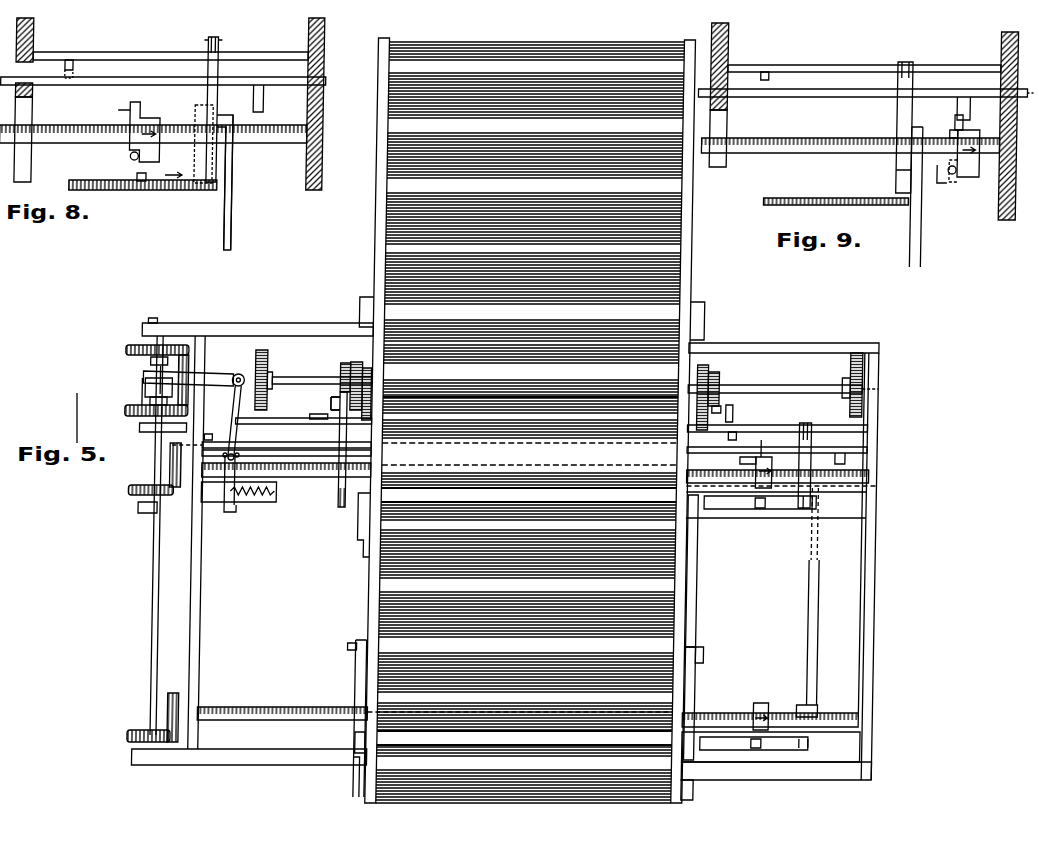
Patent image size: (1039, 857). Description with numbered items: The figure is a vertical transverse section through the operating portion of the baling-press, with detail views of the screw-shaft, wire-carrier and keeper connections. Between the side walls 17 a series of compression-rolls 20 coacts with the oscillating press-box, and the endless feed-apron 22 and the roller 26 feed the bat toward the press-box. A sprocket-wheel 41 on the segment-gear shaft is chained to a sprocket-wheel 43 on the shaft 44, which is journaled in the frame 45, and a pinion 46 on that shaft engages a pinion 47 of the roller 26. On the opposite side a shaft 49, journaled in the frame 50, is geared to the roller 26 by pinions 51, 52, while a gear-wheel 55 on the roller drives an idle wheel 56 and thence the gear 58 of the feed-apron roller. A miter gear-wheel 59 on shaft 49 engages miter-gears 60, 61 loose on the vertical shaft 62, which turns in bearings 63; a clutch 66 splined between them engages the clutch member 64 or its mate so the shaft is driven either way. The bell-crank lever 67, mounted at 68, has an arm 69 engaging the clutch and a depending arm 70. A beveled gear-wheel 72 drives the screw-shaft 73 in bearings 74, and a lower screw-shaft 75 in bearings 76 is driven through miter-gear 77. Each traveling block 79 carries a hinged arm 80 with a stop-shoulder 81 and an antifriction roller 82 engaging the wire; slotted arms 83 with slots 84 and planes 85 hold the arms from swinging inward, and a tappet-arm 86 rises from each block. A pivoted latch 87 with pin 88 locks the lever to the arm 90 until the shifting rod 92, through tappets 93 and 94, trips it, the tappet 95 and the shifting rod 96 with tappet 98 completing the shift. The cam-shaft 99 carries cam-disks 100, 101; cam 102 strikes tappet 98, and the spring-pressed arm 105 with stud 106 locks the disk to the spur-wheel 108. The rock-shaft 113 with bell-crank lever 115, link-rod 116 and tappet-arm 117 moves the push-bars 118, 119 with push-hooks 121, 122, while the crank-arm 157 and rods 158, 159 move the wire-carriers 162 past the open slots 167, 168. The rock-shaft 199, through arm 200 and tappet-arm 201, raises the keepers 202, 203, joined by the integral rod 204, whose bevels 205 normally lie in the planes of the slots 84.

In FIG. 8, the side walls 17 is at (305, 175).
In FIG. 9, the side walls 17 is at (730, 48).
In FIG. 5, the side walls 17 is at (370, 285).
In FIG. 5, the compression-rolls 20 is at (530, 422).
In FIG. 5, the endless feed-apron 22 is at (582, 436).
In FIG. 5, the roller 26 is at (484, 396).
In FIG. 5, the sprocket-wheel 41 is at (130, 490).
In FIG. 5, the sprocket-wheel 43 is at (855, 352).
In FIG. 5, the shaft 44 is at (790, 385).
In FIG. 5, the frame 45 is at (870, 603).
In FIG. 5, the pinion 46 is at (702, 364).
In FIG. 5, the pinion 47 is at (722, 410).
In FIG. 5, the shaft 49 is at (326, 377).
In FIG. 5, the frame 50 is at (204, 580).
In FIG. 5, the pinion 51 is at (346, 363).
In FIG. 5, the pinion 52 is at (335, 385).
In FIG. 5, the gear-wheel 55 is at (149, 361).
In FIG. 5, the idle wheel 56 is at (323, 385).
In FIG. 5, the gear 58 is at (268, 366).
In FIG. 5, the miter gear-wheel 59 is at (196, 335).
In FIG. 5, the miter-gear 60 is at (125, 411).
In FIG. 5, the miter-gear 61 is at (125, 350).
In FIG. 5, the vertical shaft 62 is at (154, 584).
In FIG. 5, the bearings 63 is at (141, 328).
In FIG. 5, the clutch member 64 is at (150, 400).
In FIG. 5, the clutch 66 is at (143, 377).
In FIG. 5, the bell-crank lever 67 is at (240, 428).
In FIG. 5, the mounting of bell-crank lever 68 is at (237, 373).
In FIG. 5, the arm 69 is at (145, 386).
In FIG. 5, the depending arm 70 is at (226, 500).
In FIG. 5, the beveled gear-wheel 72 is at (170, 463).
In FIG. 8, the screw-shaft 73 is at (55, 126).
In FIG. 9, the screw-shaft 73 is at (840, 138).
In FIG. 5, the screw-shaft 73 is at (312, 478).
In FIG. 5, the bearings 74 is at (870, 484).
In FIG. 5, the screw-shaft 75 is at (272, 707).
In FIG. 5, the bearings 76 is at (135, 732).
In FIG. 5, the miter-gear 77 is at (176, 692).
In FIG. 8, the traveling block 79 is at (158, 118).
In FIG. 9, the traveling block 79 is at (982, 132).
In FIG. 5, the traveling block 79 is at (764, 703).
In FIG. 8, the hinged arm 80 is at (130, 158).
In FIG. 9, the hinged arm 80 is at (943, 192).
In FIG. 5, the hinged arm 80 is at (765, 784).
In FIG. 8, the stop-shoulder 81 is at (174, 167).
In FIG. 9, the stop-shoulder 81 is at (947, 183).
In FIG. 8, the antifriction roller 82 is at (127, 183).
In FIG. 9, the antifriction roller 82 is at (944, 132).
In FIG. 5, the arms 83 is at (832, 518).
In FIG. 5, the longitudinal slot 84 is at (738, 510).
In FIG. 8, the plane 85 is at (160, 191).
In FIG. 9, the plane 85 is at (826, 198).
In FIG. 8, the tappet-arm 86 is at (114, 112).
In FIG. 9, the tappet-arm 86 is at (954, 118).
In FIG. 5, the tappet-arm 86 is at (769, 443).
In FIG. 5, the pivoted latch 87 is at (238, 492).
In FIG. 5, the pin 88 is at (239, 510).
In FIG. 5, the arm 90 is at (262, 492).
In FIG. 8, the shifting rod 92 is at (84, 85).
In FIG. 9, the shifting rod 92 is at (785, 97).
In FIG. 5, the shifting rod 92 is at (294, 448).
In FIG. 8, the tappet 93 is at (263, 100).
In FIG. 9, the tappet 93 is at (962, 95).
In FIG. 5, the tappet 93 is at (840, 452).
In FIG. 5, the tappet 94 is at (210, 433).
In FIG. 5, the tappet 95 is at (241, 456).
In FIG. 5, the shifting rod 96 is at (284, 418).
In FIG. 5, the tappet 98 is at (316, 420).
In FIG. 5, the cam-shaft 99 is at (675, 458).
In FIG. 5, the cam-disk 100 is at (340, 505).
In FIG. 5, the cam-disk 101 is at (720, 378).
In FIG. 5, the cam 102 is at (330, 400).
In FIG. 5, the spring-pressed arm 105 is at (745, 416).
In FIG. 5, the pin or stud 106 is at (743, 413).
In FIG. 5, the spur-wheel 108 is at (742, 456).
In FIG. 5, the rock-shaft 113 is at (350, 646).
In FIG. 5, the bell-crank lever 115 is at (696, 695).
In FIG. 5, the link-rod 116 is at (694, 598).
In FIG. 5, the tappet-arm 117 is at (712, 372).
In FIG. 5, the push-bar 118 is at (705, 552).
In FIG. 5, the push-bar 119 is at (665, 758).
In FIG. 5, the push-hook 121 is at (702, 535).
In FIG. 5, the push-hook 122 is at (698, 778).
In FIG. 5, the crank-arm 157 is at (359, 672).
In FIG. 5, the rod 158 is at (360, 535).
In FIG. 5, the rod 159 is at (359, 760).
In FIG. 5, the wire-carriers 162 is at (378, 490).
In FIG. 5, the open slot 167 is at (653, 495).
In FIG. 5, the open slot 168 is at (642, 738).
In FIG. 8, the rock-shaft 199 is at (118, 53).
In FIG. 9, the rock-shaft 199 is at (830, 67).
In FIG. 5, the rock-shaft 199 is at (790, 425).
In FIG. 8, the arm 200 is at (222, 50).
In FIG. 9, the arm 200 is at (915, 57).
In FIG. 5, the arm 200 is at (812, 425).
In FIG. 8, the tappet-arm 201 is at (66, 55).
In FIG. 9, the tappet-arm 201 is at (768, 77).
In FIG. 5, the tappet-arm 201 is at (741, 437).
In FIG. 9, the keeper 202 is at (897, 170).
In FIG. 5, the keeper 202 is at (813, 494).
In FIG. 5, the keeper 203 is at (815, 705).
In FIG. 8, the integral rod 204 is at (235, 234).
In FIG. 9, the integral rod 204 is at (912, 240).
In FIG. 5, the integral rod 204 is at (822, 596).
In FIG. 8, the bevels 205 is at (202, 190).
In FIG. 5, the bevels 205 is at (805, 510).